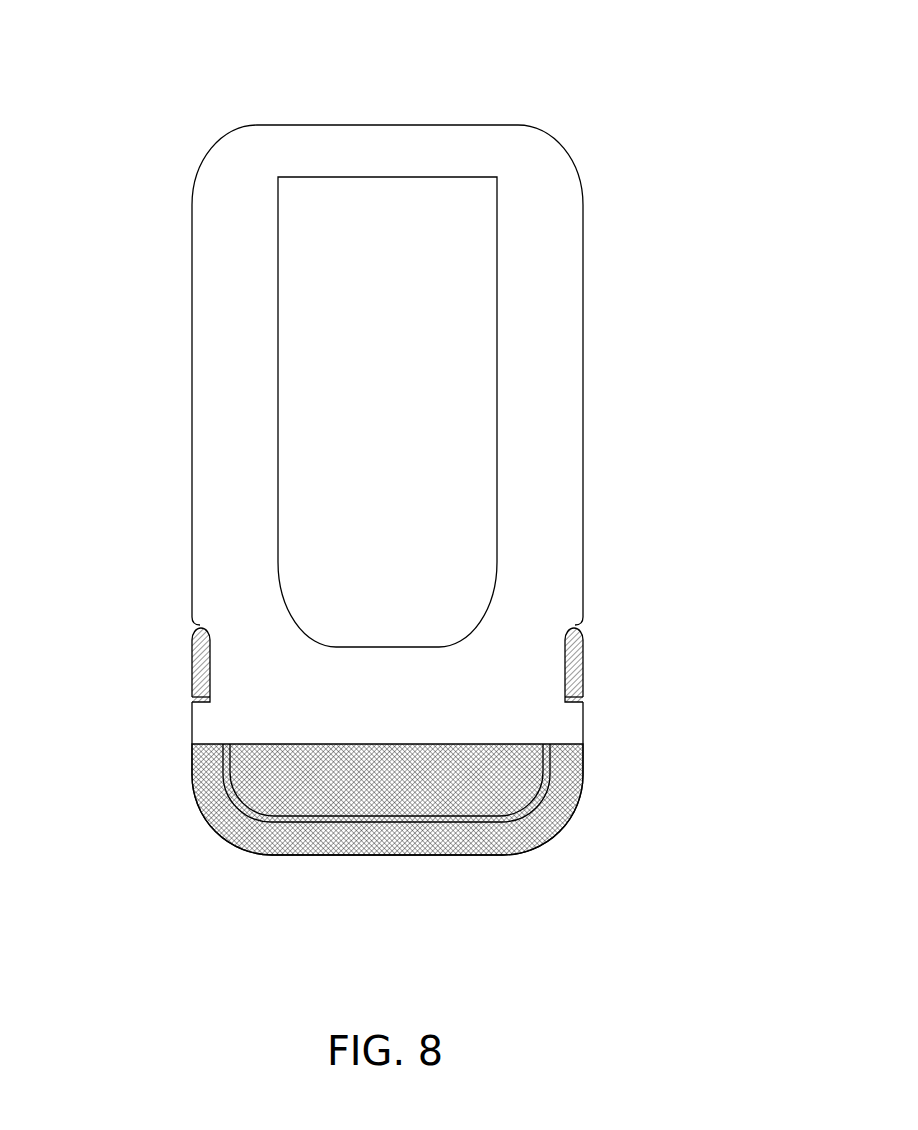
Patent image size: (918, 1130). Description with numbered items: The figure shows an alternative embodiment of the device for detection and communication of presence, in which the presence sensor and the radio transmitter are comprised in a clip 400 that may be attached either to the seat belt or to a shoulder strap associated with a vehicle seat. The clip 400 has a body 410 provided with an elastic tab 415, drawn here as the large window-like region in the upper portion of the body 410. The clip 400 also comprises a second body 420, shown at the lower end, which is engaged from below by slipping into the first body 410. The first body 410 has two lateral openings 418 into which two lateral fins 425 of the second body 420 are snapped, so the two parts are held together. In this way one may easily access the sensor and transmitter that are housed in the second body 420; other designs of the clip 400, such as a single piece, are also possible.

The clip 400 is at (397, 481).
The body 410 is at (583, 298).
The elastic tab 415 is at (358, 347).
The lateral openings 418 is at (588, 624).
The second body 420 is at (263, 855).
The lateral fins 425 is at (188, 657).